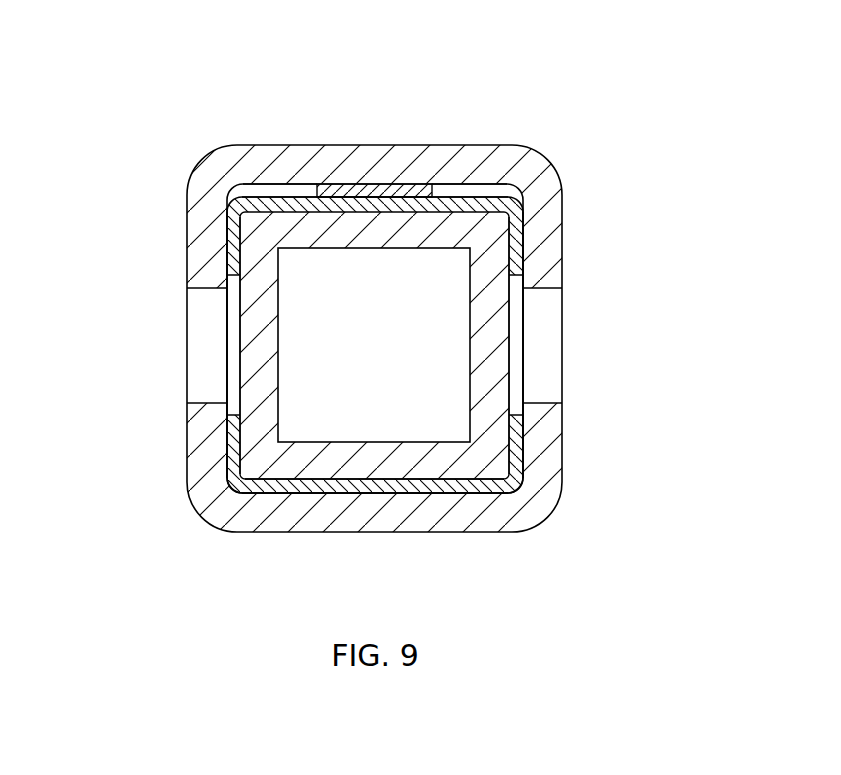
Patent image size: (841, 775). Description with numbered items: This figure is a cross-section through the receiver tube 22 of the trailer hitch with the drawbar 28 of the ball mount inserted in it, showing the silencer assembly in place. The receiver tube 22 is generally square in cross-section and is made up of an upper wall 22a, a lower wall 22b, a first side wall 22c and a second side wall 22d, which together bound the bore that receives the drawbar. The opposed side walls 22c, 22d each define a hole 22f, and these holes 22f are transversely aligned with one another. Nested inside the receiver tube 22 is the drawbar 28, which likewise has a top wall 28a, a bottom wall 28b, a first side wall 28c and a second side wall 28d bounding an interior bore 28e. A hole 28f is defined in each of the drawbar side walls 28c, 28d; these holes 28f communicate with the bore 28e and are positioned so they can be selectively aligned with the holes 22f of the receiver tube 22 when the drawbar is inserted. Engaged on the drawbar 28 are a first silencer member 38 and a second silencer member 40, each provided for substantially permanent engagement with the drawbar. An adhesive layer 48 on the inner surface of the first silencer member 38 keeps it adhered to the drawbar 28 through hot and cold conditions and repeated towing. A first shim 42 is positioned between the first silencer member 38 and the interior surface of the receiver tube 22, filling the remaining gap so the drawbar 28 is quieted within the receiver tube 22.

The receiver tube 22 is at (164, 136).
The upper wall 22a is at (490, 157).
The lower wall 22b is at (257, 520).
The first side wall 22c is at (200, 205).
The second side wall 22d is at (548, 228).
The hole 22f is at (542, 400).
The drawbar 28 is at (254, 459).
The top wall 28a is at (407, 202).
The bottom wall 28b is at (495, 527).
The first side wall 28c is at (234, 270).
The second side wall 28d is at (498, 445).
The interior bore 28e is at (382, 274).
The hole 28f is at (514, 417).
The first silencer member 38 is at (322, 200).
The second silencer member 40 is at (320, 490).
The first shim 42 is at (385, 188).
The adhesive layer 48 is at (283, 203).